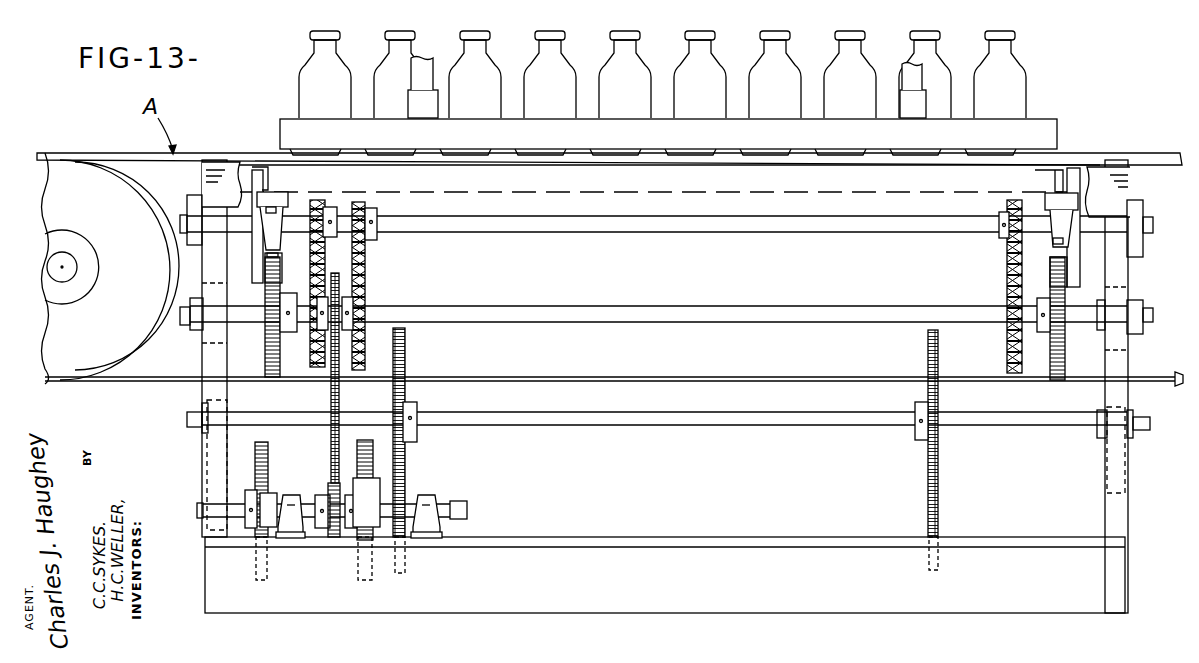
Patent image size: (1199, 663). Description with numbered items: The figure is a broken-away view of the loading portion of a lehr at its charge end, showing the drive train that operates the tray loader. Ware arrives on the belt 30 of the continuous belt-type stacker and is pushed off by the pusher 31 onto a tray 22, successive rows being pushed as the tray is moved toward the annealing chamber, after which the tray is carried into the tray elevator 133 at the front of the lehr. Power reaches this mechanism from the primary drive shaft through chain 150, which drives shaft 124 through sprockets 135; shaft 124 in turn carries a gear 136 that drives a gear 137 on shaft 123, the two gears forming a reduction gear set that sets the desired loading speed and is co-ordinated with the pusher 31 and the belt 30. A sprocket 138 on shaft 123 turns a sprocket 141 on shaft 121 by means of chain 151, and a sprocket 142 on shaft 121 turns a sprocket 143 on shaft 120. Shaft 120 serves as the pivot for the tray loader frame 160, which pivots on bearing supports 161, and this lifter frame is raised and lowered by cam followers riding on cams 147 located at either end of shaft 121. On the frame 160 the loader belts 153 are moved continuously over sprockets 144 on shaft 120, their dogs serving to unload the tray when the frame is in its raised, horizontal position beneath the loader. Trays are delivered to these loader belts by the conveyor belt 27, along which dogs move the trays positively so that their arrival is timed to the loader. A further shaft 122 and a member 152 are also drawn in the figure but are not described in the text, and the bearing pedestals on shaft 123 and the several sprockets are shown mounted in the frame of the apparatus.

The tray 22 is at (756, 194).
The conveyor belt 27 is at (406, 566).
The belt 30 is at (92, 155).
The pusher 31 is at (280, 133).
The shaft 120 is at (543, 233).
The shaft 121 is at (603, 308).
The lower shaft 122 is at (733, 419).
The shaft 123 is at (280, 497).
The shaft 124 is at (226, 505).
The tray elevator 133 is at (408, 403).
The sprockets 135 is at (264, 490).
The gear 136 is at (356, 538).
The gear 137 is at (375, 466).
The sprocket 138 is at (327, 500).
The sprocket 141 is at (326, 302).
The sprocket 142 is at (350, 306).
The sprocket 143 is at (374, 215).
The sprockets 144 is at (334, 211).
The cams 147 is at (270, 345).
The chain 150 is at (256, 578).
The chain 151 is at (339, 378).
The sprocket chain 152 is at (362, 259).
The belts 153 is at (322, 252).
The tray loader frame 160 is at (268, 173).
The bearing supports 161 is at (270, 238).